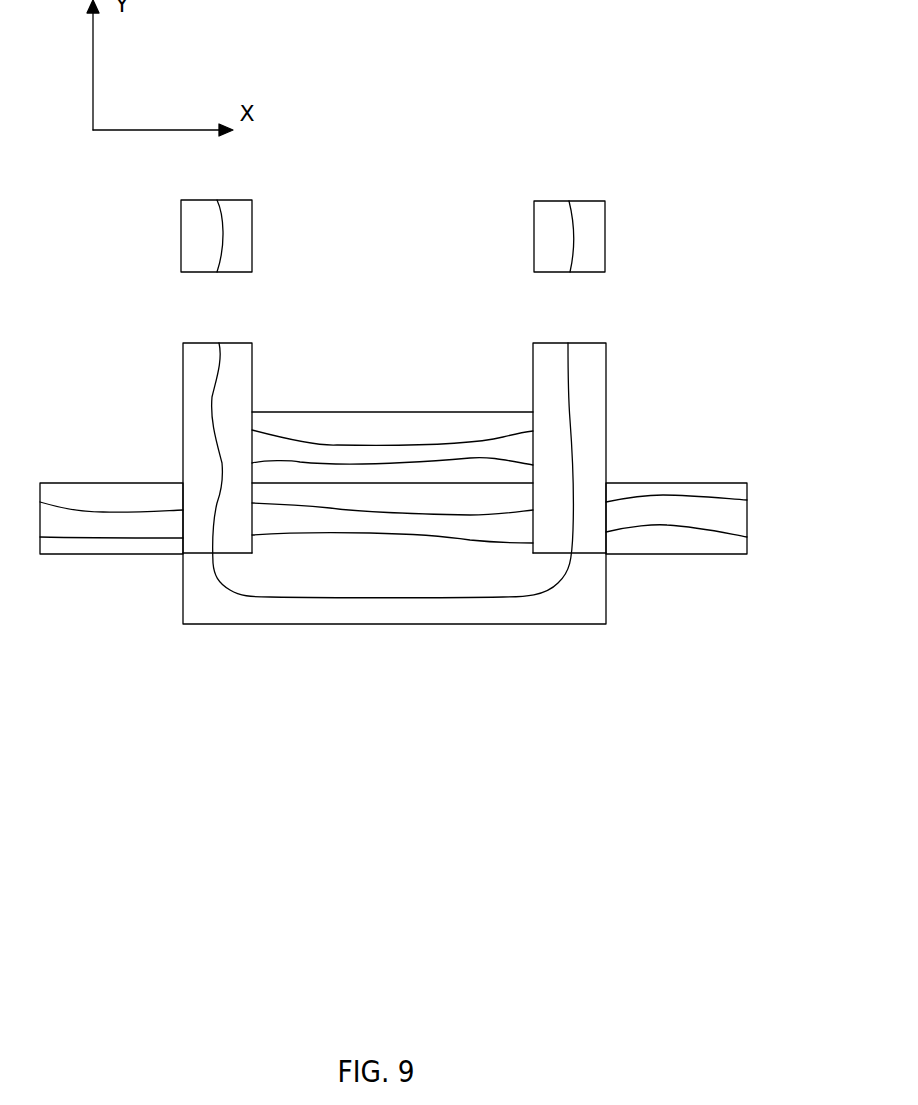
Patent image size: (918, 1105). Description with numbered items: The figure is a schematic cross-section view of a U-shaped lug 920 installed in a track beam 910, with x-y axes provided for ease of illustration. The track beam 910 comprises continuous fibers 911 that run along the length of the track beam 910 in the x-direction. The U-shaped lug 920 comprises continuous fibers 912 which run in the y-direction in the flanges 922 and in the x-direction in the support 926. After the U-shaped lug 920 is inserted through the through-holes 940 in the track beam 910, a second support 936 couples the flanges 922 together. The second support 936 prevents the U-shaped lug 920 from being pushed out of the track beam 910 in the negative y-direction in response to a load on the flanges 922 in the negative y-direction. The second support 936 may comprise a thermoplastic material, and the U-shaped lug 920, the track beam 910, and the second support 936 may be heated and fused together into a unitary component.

The track beam 910 is at (410, 525).
The continuous fibers 911 is at (710, 528).
The continuous fibers 912 is at (212, 413).
The U-shaped lug 920 is at (387, 389).
The flanges 922 is at (253, 387).
The support 926 is at (358, 624).
The second support 936 is at (358, 412).
The through-holes 940 is at (177, 558).